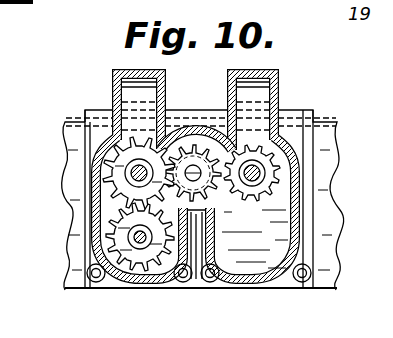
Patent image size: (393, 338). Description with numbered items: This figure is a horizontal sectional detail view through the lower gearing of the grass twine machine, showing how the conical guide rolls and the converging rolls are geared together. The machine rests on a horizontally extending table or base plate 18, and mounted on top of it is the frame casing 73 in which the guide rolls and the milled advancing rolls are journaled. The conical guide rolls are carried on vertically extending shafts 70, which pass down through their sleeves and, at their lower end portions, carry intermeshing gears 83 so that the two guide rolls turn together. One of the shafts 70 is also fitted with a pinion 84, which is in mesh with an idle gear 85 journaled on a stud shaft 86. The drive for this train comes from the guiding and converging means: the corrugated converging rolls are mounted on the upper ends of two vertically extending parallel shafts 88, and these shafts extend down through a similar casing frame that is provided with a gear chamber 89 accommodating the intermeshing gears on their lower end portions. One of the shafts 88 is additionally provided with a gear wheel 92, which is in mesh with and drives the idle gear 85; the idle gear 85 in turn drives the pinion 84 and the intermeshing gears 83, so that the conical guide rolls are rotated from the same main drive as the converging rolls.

The table or base plate 18 is at (72, 122).
The vertically extending shafts 70 is at (106, 168).
The frame casing 73 is at (201, 288).
The intermeshing gears 83 is at (100, 196).
The pinion 84 is at (92, 155).
The idle gear 85 is at (189, 136).
The stud shaft 86 is at (229, 244).
The vertically extending parallel shafts 88 is at (279, 148).
The gear chamber 89 is at (285, 203).
The gear wheel 92 is at (283, 167).